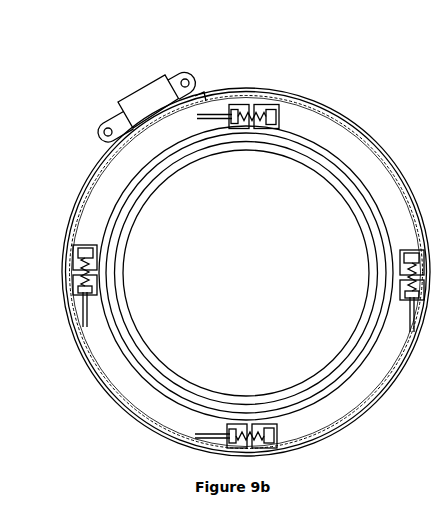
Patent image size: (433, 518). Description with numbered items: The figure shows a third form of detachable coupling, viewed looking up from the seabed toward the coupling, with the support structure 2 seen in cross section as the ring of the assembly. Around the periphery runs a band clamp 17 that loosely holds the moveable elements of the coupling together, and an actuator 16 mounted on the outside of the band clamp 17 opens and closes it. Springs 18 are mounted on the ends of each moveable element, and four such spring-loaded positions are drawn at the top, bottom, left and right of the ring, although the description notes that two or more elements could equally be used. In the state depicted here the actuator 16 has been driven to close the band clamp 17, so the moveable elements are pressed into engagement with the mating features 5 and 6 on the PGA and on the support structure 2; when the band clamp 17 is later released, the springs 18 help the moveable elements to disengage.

The support structure 2 is at (118, 237).
The mating feature 5 is at (202, 273).
The mating feature 6 is at (113, 217).
The actuator 16 is at (145, 92).
The band clamp 17 is at (290, 100).
The springs 18 is at (88, 280).